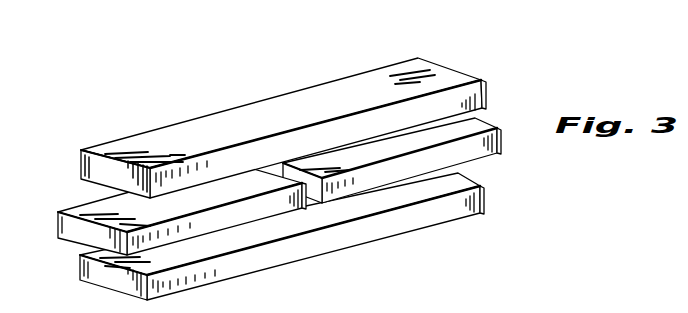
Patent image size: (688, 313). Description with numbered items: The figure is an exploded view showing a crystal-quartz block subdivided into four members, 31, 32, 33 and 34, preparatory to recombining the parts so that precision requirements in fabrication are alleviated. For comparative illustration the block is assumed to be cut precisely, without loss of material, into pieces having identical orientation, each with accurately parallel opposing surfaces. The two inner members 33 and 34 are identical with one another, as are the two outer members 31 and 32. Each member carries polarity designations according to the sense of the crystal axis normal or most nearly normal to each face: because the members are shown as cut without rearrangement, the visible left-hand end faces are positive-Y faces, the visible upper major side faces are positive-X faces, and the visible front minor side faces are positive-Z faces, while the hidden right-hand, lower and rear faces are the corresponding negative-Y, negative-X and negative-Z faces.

The outer member 31 is at (263, 110).
The outer member 32 is at (388, 228).
The inner member 33 is at (58, 217).
The inner member 34 is at (489, 140).